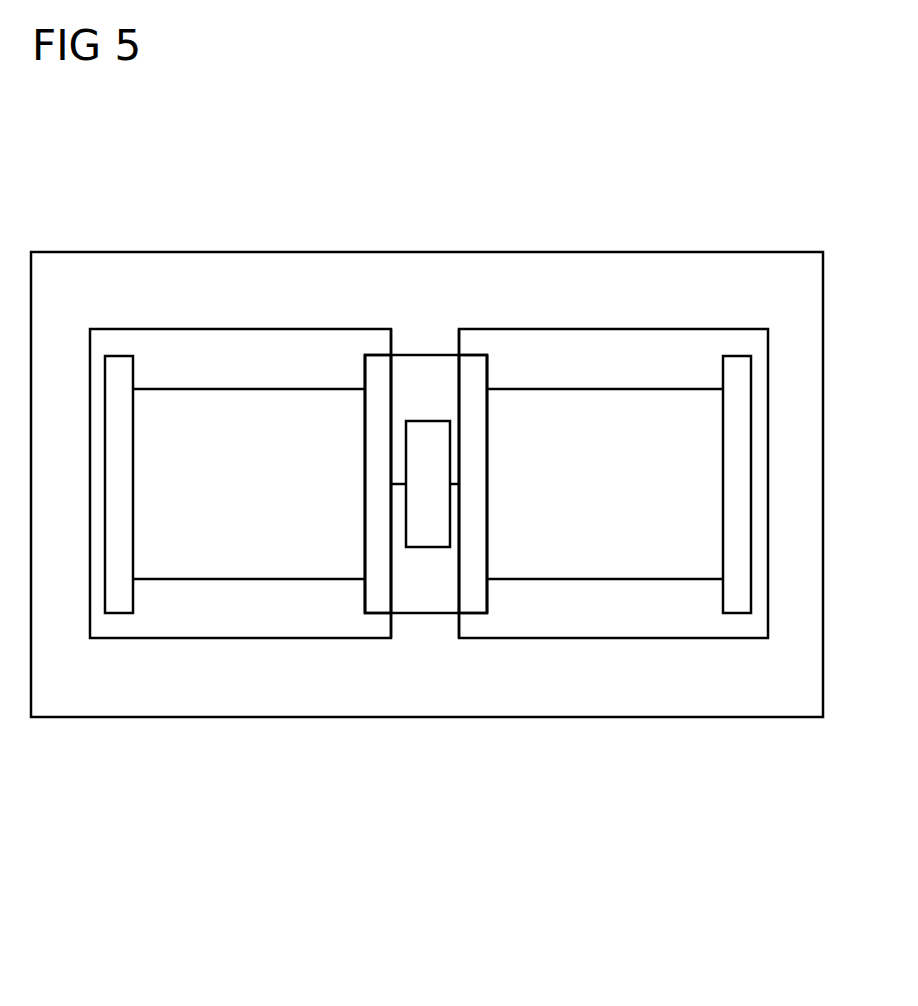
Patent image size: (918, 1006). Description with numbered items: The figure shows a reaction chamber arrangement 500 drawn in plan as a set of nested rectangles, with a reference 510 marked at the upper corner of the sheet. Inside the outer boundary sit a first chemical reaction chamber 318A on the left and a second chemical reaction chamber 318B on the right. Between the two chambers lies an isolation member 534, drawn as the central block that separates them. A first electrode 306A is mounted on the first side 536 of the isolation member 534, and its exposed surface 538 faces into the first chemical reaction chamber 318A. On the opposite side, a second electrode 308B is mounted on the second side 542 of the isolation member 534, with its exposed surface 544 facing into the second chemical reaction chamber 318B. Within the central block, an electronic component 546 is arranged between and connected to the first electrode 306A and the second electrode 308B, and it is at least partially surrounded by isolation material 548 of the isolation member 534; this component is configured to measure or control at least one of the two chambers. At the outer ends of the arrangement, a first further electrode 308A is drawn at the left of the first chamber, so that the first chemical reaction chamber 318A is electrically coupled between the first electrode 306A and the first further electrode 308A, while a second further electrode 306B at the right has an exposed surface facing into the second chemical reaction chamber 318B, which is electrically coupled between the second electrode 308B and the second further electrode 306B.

The reaction chamber arrangement 500 is at (823, 378).
The substrate 510 is at (771, 66).
The first chemical reaction chamber 318A is at (217, 389).
The second chemical reaction chamber 318B is at (638, 389).
The first further electrode 308A is at (118, 613).
The second electrode 308B is at (477, 613).
The first electrode 306A is at (381, 613).
The second further electrode 306B is at (740, 613).
The isolation member 534 is at (417, 355).
The first side 536 is at (391, 370).
The exposed surface 538 is at (365, 370).
The second side 542 is at (459, 370).
The exposed surface 544 is at (487, 370).
The electronic component 546 is at (413, 547).
The isolation material 548 is at (439, 585).